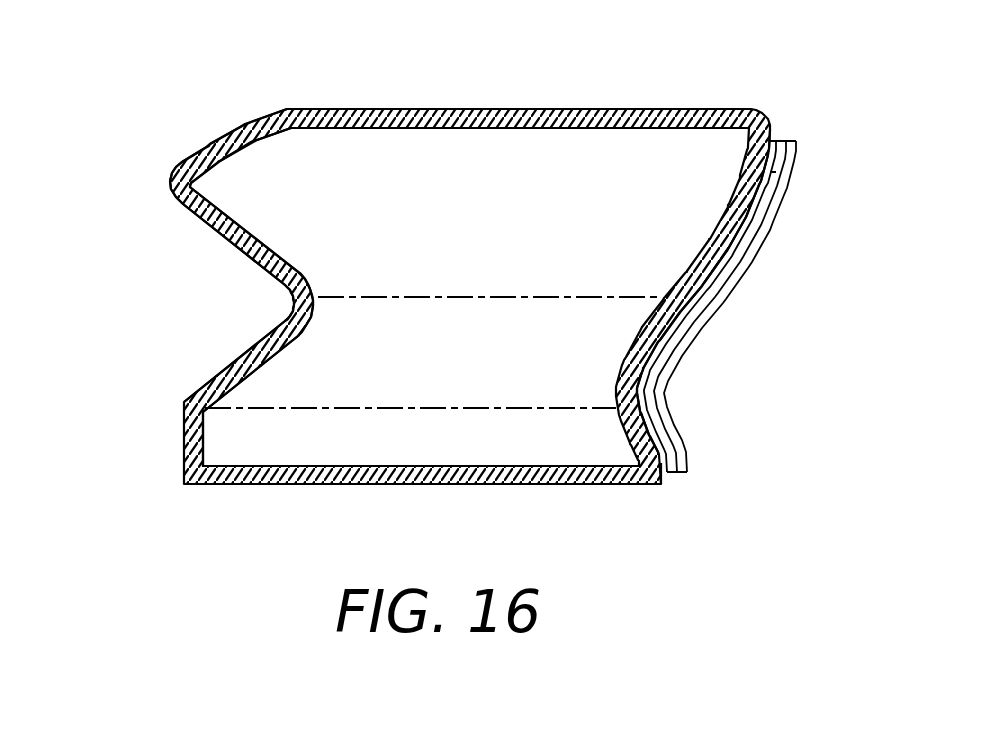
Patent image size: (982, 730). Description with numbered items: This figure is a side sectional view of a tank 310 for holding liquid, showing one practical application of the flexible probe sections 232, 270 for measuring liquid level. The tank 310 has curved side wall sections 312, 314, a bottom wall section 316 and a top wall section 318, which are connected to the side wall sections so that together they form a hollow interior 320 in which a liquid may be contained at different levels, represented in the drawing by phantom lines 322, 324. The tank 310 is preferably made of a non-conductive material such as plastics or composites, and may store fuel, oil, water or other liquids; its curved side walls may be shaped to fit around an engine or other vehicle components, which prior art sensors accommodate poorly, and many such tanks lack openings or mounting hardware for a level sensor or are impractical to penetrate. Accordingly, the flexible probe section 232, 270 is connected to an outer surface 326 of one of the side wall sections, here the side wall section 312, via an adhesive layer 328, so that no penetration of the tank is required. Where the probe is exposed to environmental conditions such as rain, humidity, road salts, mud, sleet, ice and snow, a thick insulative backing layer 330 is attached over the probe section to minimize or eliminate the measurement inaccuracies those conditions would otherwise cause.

The tank 310 is at (478, 100).
The curved side wall section 312 is at (707, 253).
The curved side wall section 314 is at (243, 250).
The bottom wall section 316 is at (547, 485).
The top wall section 318 is at (607, 108).
The hollow interior 320 is at (367, 160).
The phantom line 322 is at (380, 407).
The phantom line 324 is at (443, 296).
The outer surface 326 is at (670, 483).
The adhesive layer 328 is at (652, 427).
The insulative backing layer 330 is at (757, 256).
The flexible probe section 232 is at (765, 306).
The flexible probe section 270 is at (680, 330).